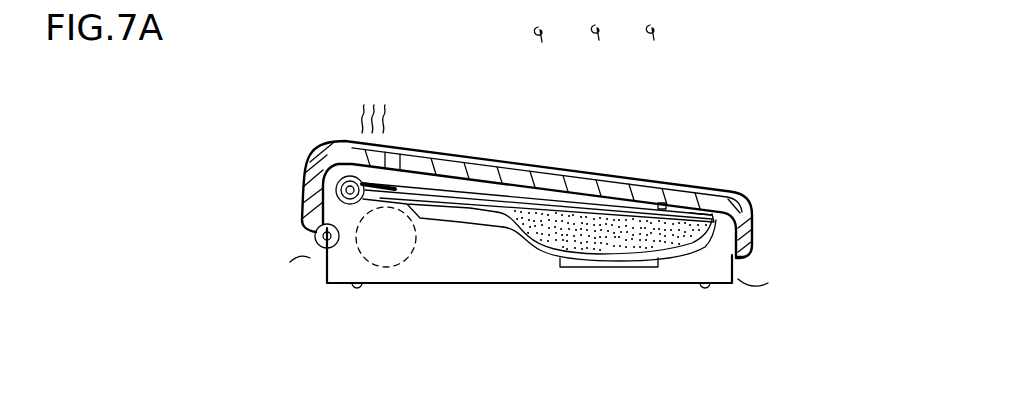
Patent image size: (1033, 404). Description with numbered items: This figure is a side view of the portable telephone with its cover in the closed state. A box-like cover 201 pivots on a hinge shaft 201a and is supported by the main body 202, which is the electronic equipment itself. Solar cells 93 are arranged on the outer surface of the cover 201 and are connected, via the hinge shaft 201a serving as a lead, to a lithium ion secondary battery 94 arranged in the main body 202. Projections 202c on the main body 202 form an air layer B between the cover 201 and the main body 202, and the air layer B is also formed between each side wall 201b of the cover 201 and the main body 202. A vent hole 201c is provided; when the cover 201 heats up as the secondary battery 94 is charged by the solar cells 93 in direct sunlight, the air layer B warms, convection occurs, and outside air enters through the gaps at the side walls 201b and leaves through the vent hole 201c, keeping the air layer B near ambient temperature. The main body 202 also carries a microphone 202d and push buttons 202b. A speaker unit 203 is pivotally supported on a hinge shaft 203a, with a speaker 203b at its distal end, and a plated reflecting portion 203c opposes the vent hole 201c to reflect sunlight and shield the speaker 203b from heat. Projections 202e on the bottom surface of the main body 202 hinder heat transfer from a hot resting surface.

The cover 201 is at (583, 184).
The hinge shaft 201a is at (316, 235).
The side wall 201b is at (308, 172).
The vent hole 201c is at (386, 148).
The main body 202 is at (652, 270).
The push buttons 202b is at (484, 221).
The projections 202c is at (664, 203).
The microphone 202d is at (587, 268).
The projections 202e is at (358, 288).
The speaker unit 203 is at (543, 205).
The hinge shaft 203a is at (340, 178).
The speaker 203b is at (688, 208).
The reflecting portion 203c is at (400, 150).
The solar cells 93 is at (643, 218).
The lithium ion secondary battery 94 is at (400, 264).
The air layer B is at (500, 170).